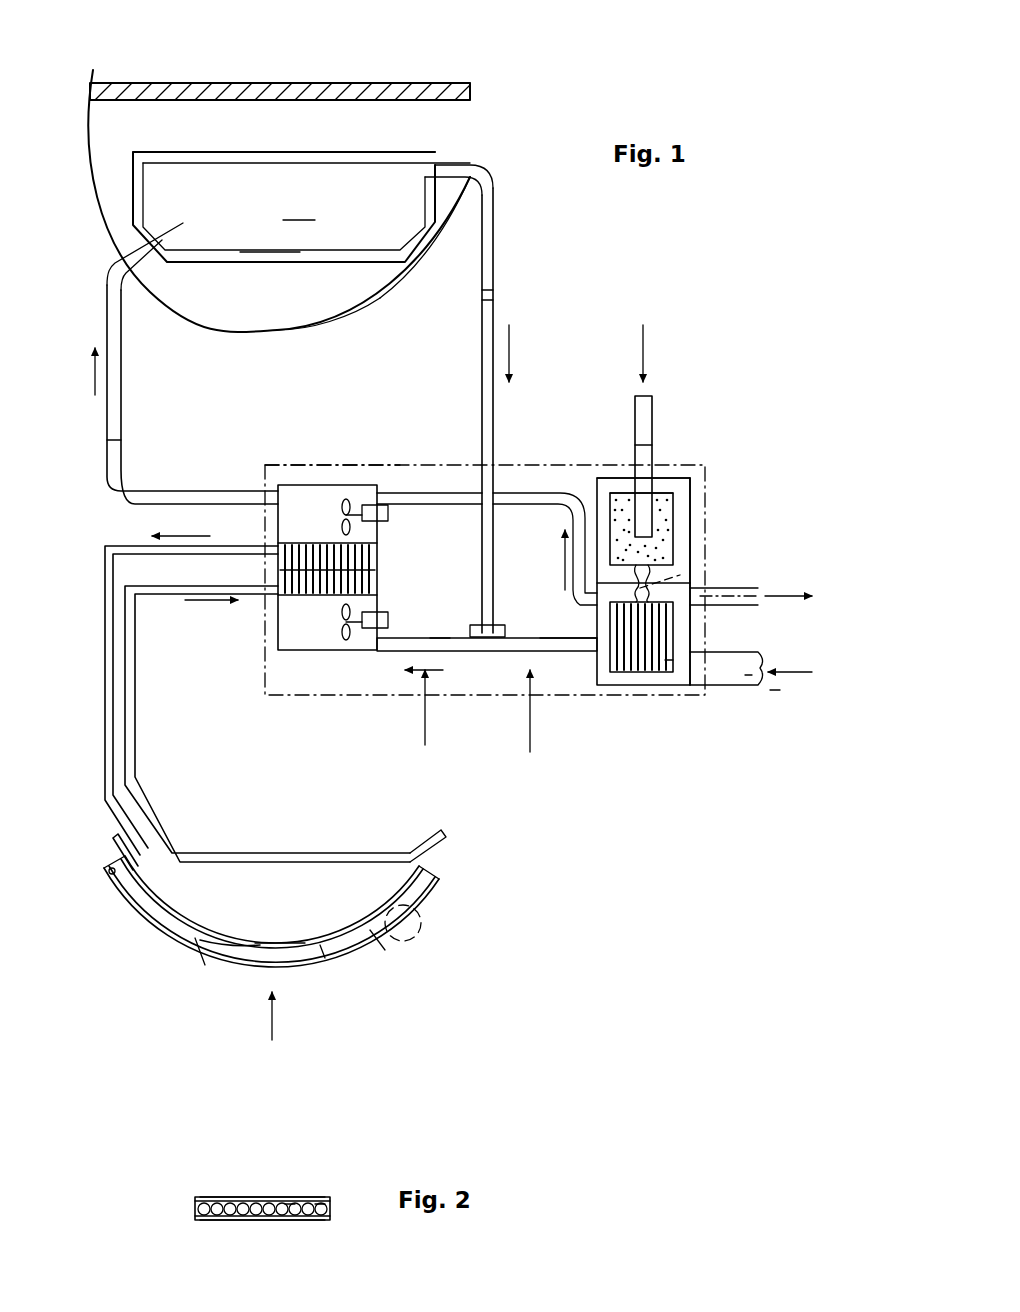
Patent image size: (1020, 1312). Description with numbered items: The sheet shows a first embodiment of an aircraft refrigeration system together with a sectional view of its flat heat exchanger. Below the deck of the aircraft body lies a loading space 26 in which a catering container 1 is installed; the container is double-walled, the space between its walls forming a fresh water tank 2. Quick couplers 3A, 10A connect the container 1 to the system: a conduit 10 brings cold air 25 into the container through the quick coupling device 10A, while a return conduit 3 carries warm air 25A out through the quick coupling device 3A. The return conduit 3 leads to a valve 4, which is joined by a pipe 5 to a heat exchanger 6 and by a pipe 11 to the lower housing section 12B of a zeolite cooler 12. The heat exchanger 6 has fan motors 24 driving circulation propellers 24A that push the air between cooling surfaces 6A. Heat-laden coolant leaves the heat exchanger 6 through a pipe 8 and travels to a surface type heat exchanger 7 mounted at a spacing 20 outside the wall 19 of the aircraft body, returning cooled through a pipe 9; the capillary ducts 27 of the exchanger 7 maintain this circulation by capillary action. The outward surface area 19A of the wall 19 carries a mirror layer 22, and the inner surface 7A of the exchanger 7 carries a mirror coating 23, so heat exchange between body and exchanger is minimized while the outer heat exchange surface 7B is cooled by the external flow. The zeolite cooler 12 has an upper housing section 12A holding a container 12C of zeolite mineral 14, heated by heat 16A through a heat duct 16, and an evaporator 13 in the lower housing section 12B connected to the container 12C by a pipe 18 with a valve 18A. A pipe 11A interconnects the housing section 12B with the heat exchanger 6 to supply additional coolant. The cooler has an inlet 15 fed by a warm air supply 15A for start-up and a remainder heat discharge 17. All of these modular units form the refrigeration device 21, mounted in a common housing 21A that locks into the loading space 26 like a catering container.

In FIG. 1, the catering container 1 is at (185, 180).
In FIG. 1, the fresh water tank 2 is at (360, 160).
In FIG. 1, the return conduit 3 is at (494, 213).
In FIG. 1, the quick coupling device 3A is at (436, 162).
In FIG. 1, the valve 4 is at (490, 655).
In FIG. 1, the pipe or conduit 5 is at (395, 652).
In FIG. 1, the heat exchanger 6 is at (305, 652).
In FIG. 1, the cooling surfaces 6A is at (325, 575).
In FIG. 1, the surface type heat exchanger 7 is at (172, 940).
In FIG. 2, the surface type heat exchanger 7 is at (170, 1224).
In FIG. 1, the inner surface 7A is at (230, 950).
In FIG. 2, the inner surface 7A is at (218, 1197).
In FIG. 2, the outer heat exchange surface 7B is at (220, 1222).
In FIG. 1, the pipe or conduit 8 is at (106, 688).
In FIG. 1, the pipe or duct 9 is at (134, 688).
In FIG. 1, the conduit 10 is at (122, 382).
In FIG. 1, the quick coupling device 10A is at (175, 240).
In FIG. 1, the pipe or conduit 11 is at (572, 652).
In FIG. 1, the pipe or conduit 11A is at (530, 500).
In FIG. 1, the zeolite cooler 12 is at (582, 605).
In FIG. 1, the upper housing section 12A is at (691, 505).
In FIG. 1, the lower housing section 12B is at (691, 630).
In FIG. 1, the container 12C is at (620, 493).
In FIG. 1, the evaporator 13 is at (645, 660).
In FIG. 1, the zeolite mineral 14 is at (670, 483).
In FIG. 1, the inlet 15 is at (735, 686).
In FIG. 1, the warm air supply 15A is at (798, 665).
In FIG. 1, the heat duct 16 is at (652, 412).
In FIG. 1, the heat 16A is at (645, 350).
In FIG. 1, the remainder heat discharge 17 is at (735, 590).
In FIG. 1, the pipe or duct 18 is at (625, 600).
In FIG. 1, the valve 18A is at (695, 575).
In FIG. 1, the wall 19 is at (413, 275).
In FIG. 1, the surface area 19A is at (280, 943).
In FIG. 1, the spacing 20 is at (320, 952).
In FIG. 1, the refrigeration device 21 is at (437, 442).
In FIG. 1, the common housing 21A is at (335, 465).
In FIG. 1, the mirror layer or film 22 is at (200, 945).
In FIG. 1, the mirror coating 23 is at (108, 873).
In FIG. 2, the mirror coating 23 is at (262, 1197).
In FIG. 1, the fan motors 24 is at (388, 520).
In FIG. 1, the circulation propellers 24A is at (345, 505).
In FIG. 1, the cold air 25 is at (107, 458).
In FIG. 1, the warm air 25A is at (494, 300).
In FIG. 1, the loading space 26 is at (345, 320).
In FIG. 2, the capillary ducts 27 is at (320, 1202).